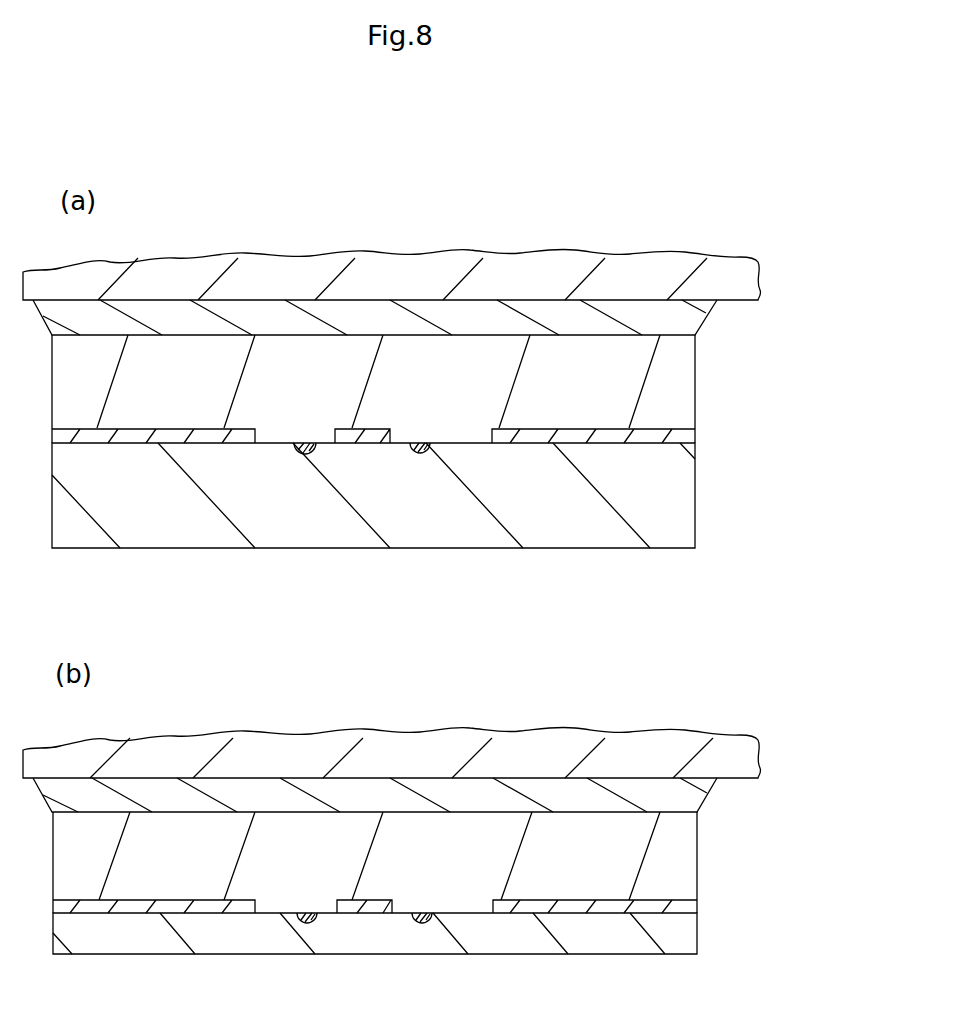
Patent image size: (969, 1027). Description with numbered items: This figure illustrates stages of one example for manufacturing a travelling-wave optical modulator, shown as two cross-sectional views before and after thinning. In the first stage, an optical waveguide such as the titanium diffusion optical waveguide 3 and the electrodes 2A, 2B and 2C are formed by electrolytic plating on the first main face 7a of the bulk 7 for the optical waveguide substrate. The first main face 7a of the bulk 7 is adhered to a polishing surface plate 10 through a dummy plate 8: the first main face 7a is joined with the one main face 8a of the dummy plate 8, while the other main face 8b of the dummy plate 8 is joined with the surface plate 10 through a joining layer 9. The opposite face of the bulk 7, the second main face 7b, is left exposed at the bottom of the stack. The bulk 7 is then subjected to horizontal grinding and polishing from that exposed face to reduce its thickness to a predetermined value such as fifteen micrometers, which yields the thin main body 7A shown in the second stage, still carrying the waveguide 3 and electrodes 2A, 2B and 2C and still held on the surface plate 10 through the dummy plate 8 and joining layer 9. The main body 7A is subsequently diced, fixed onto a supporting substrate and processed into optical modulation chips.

The electrode 2A is at (237, 430).
The electrode 2B is at (379, 428).
The electrode 2C is at (541, 428).
The titanium diffusion optical waveguide 3 is at (304, 441).
The bulk 7 is at (703, 486).
The main body 7A is at (702, 930).
The first main face 7a is at (472, 440).
The second main face 7b is at (520, 548).
The dummy plate 8 is at (700, 392).
The one main face of the dummy plate 8a is at (396, 446).
The other main face of the dummy plate 8b is at (453, 335).
The joining layer 9 is at (693, 316).
The polishing surface plate 10 is at (565, 270).